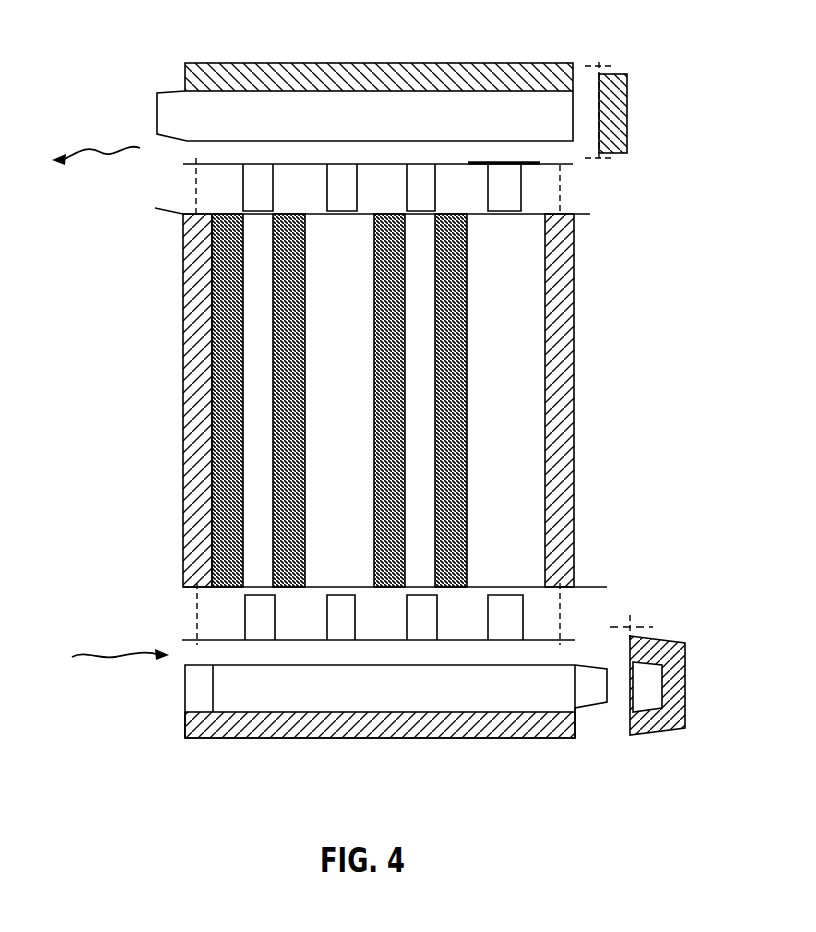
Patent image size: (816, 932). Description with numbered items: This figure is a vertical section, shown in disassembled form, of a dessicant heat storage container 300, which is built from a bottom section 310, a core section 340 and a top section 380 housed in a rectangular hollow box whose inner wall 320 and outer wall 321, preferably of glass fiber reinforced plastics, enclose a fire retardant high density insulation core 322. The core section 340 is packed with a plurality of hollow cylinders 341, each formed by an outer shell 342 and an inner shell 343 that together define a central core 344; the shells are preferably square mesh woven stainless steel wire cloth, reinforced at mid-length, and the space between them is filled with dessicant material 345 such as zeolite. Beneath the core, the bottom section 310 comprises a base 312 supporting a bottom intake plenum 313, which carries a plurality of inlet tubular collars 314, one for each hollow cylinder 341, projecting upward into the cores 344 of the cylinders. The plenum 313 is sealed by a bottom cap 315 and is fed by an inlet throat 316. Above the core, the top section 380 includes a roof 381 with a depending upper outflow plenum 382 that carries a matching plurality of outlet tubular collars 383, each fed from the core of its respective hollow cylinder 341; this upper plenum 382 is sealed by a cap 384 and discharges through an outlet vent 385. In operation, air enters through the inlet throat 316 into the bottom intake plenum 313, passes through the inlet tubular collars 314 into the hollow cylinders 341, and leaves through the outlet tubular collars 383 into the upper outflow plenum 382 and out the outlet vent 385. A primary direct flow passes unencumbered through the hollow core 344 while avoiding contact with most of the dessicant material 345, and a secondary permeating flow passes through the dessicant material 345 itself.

The dessicant heat storage container 300 is at (403, 397).
The bottom section 310 is at (355, 725).
The base 312 is at (327, 718).
The bottom intake plenum 313 is at (267, 698).
The inlet tubular collars 314 is at (512, 606).
The bottom cap 315 is at (650, 723).
The inlet throat 316 is at (197, 655).
The inner wall 320 is at (542, 372).
The outer wall 321 is at (575, 300).
The insulation core 322 is at (558, 236).
The core section 340 is at (183, 421).
The hollow cylinders 341 is at (467, 460).
The outer shell 342 is at (465, 415).
The inner shell 343 is at (435, 530).
The core 344 is at (433, 404).
The dessicant material 345 is at (455, 328).
The top section 380 is at (378, 110).
The roof 381 is at (481, 63).
The upper outflow plenum 382 is at (525, 108).
The outlet tubular collars 383 is at (512, 191).
The cap 384 is at (613, 105).
The outlet vent 385 is at (183, 155).